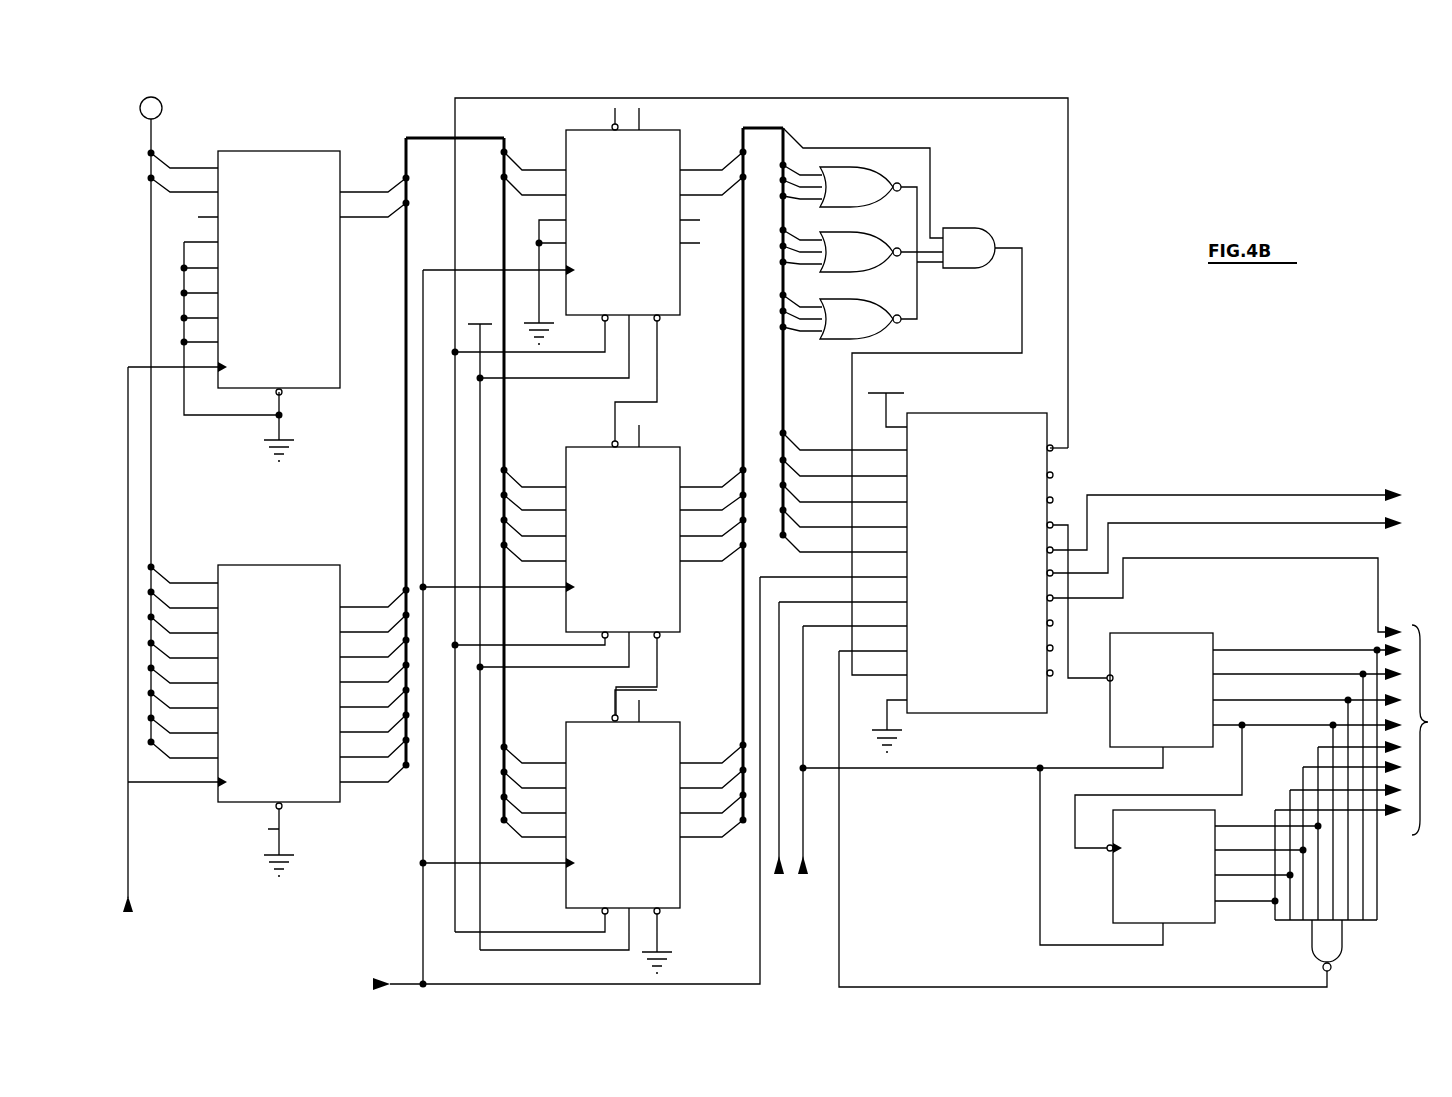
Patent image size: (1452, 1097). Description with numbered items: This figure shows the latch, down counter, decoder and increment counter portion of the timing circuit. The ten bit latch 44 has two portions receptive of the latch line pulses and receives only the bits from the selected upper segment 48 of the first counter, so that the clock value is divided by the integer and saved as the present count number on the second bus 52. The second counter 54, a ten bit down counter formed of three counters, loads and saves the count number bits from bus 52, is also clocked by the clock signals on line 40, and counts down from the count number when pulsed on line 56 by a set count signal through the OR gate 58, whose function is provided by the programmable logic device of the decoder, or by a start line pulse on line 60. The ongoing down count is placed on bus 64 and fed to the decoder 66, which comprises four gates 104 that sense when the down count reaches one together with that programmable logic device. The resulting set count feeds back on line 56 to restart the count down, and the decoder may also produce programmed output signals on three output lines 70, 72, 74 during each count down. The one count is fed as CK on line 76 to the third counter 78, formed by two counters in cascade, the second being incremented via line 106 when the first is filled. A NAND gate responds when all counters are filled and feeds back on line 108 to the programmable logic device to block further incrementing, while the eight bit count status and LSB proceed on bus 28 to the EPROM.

The bus 28 is at (1417, 747).
The line 40 is at (418, 982).
The first latch circuit 44 is at (253, 118).
The upper segment 48 is at (151, 135).
The second bus 52 is at (444, 137).
The second counter 54 is at (562, 96).
The line 56 is at (1069, 333).
The OR gate 58 is at (975, 715).
The line 60 is at (990, 715).
The bus 64 is at (781, 138).
The decoder 66 is at (1070, 83).
The output line 70 is at (1185, 558).
The output line 72 is at (1185, 495).
The output line 74 is at (1185, 523).
The line 76 is at (1070, 630).
The third counter 78 is at (1030, 797).
The gates 104 is at (960, 182).
The line 106 is at (1243, 738).
The line 108 is at (842, 940).